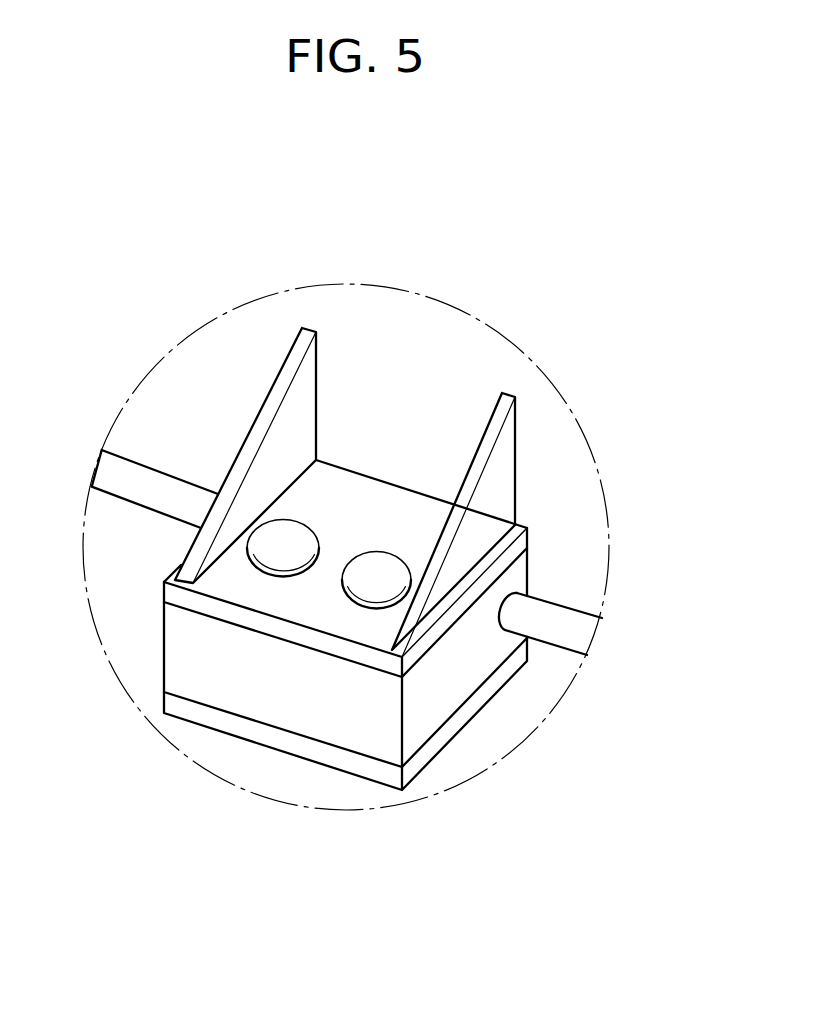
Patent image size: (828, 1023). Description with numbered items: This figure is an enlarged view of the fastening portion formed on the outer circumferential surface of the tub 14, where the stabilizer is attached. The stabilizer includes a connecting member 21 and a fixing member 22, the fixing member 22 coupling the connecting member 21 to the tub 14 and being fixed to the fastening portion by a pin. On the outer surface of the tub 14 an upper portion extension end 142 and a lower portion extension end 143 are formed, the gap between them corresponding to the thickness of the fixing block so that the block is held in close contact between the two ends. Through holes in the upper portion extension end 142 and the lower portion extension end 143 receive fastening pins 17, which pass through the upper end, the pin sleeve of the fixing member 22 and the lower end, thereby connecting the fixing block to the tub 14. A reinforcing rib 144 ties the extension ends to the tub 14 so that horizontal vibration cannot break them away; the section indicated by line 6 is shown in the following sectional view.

The tub 14 is at (561, 432).
The fastening pin 17 is at (381, 577).
The connecting member 21 is at (137, 477).
The fixing member 22 is at (317, 712).
The upper portion extension end 142 is at (530, 537).
The lower portion extension end 143 is at (487, 693).
The reinforcing rib 144 is at (507, 397).
The section line 6-6' 6 is at (195, 645).